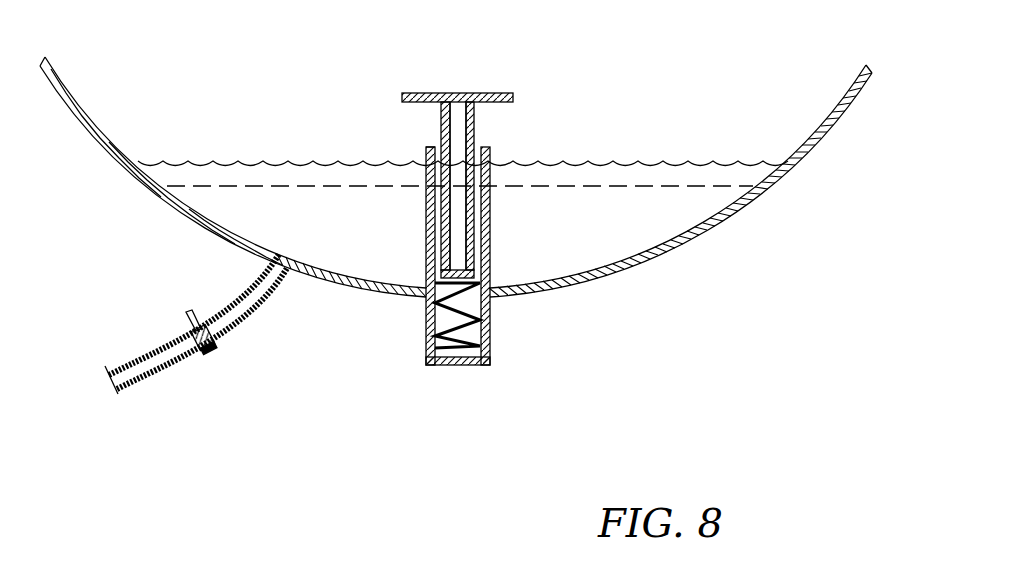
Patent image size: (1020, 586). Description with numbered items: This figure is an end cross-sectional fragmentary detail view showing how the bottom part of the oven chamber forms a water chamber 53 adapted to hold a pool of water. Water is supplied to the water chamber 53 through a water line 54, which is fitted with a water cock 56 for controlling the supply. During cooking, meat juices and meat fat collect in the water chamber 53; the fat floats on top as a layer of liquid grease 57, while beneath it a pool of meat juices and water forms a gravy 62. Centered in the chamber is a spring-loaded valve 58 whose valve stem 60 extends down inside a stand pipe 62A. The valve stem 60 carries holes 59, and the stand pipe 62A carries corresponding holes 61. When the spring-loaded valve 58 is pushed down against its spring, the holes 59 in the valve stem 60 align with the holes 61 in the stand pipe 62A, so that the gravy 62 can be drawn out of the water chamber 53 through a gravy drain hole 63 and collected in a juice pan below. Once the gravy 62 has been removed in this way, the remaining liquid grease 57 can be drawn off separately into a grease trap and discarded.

The water chamber 53 is at (598, 245).
The water line 54 is at (234, 322).
The water cock 56 is at (193, 334).
The liquid grease 57 is at (598, 178).
The spring-loaded valve 58 is at (460, 93).
The holes 59 is at (442, 185).
The valve stem 60 is at (440, 125).
The holes 61 is at (428, 267).
The gravy 62 is at (652, 225).
The stand pipe 62A is at (423, 153).
The gravy drain hole 63 is at (457, 365).